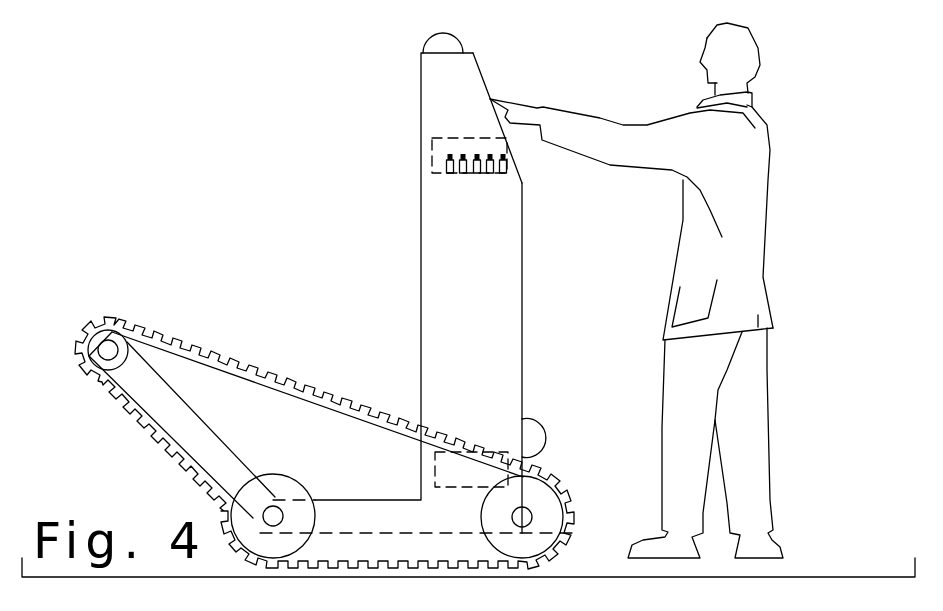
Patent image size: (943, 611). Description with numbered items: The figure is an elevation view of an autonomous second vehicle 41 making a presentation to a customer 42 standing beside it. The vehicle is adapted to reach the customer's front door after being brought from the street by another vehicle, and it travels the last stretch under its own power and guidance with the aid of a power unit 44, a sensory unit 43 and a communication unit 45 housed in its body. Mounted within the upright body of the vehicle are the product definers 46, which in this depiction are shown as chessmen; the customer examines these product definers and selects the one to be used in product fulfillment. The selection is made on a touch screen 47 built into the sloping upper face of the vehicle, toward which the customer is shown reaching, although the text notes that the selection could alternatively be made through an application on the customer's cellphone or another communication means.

The autonomous second vehicle 41 is at (421, 312).
The customer 42 is at (767, 125).
The sensory unit 43 is at (543, 444).
The power unit 44 is at (437, 474).
The communication unit 45 is at (425, 43).
The product definers 46 is at (447, 155).
The touch screen 47 is at (487, 82).